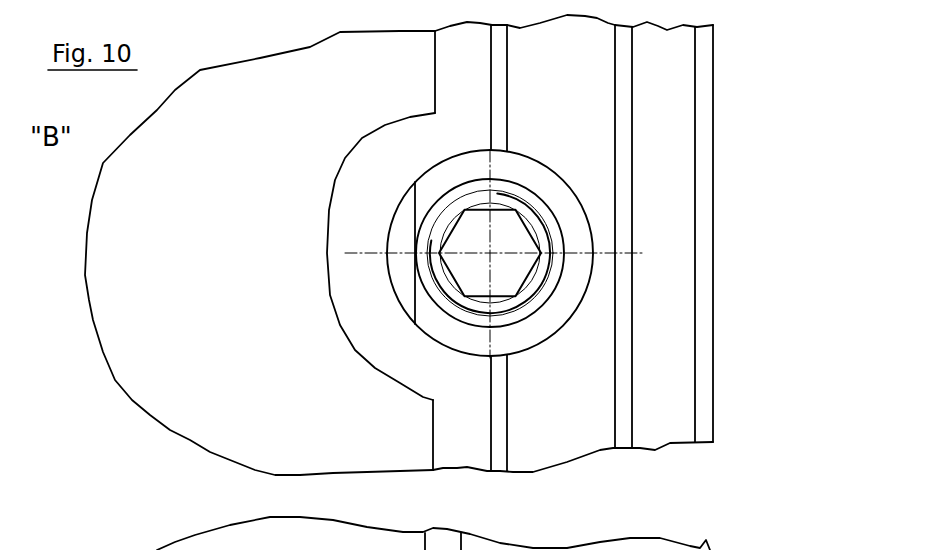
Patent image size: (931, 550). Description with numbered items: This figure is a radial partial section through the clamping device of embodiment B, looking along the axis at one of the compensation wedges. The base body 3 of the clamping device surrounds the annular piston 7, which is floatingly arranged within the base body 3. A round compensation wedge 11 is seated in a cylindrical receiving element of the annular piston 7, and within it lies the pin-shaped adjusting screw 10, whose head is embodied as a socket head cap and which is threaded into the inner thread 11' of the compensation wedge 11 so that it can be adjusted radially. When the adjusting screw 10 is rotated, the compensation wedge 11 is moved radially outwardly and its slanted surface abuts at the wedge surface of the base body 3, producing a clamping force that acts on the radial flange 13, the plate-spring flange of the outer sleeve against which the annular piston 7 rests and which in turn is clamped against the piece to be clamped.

The base body 3 is at (139, 285).
The annular piston 7 is at (563, 403).
The adjusting screw 10 is at (537, 297).
The compensation wedge 11 is at (610, 253).
The inner thread 11' is at (309, 243).
The radial flange 13 is at (670, 110).